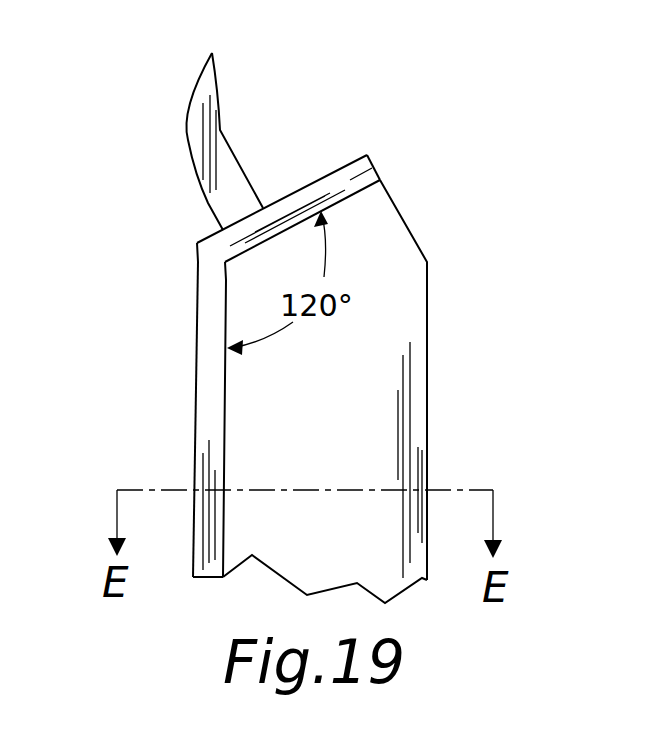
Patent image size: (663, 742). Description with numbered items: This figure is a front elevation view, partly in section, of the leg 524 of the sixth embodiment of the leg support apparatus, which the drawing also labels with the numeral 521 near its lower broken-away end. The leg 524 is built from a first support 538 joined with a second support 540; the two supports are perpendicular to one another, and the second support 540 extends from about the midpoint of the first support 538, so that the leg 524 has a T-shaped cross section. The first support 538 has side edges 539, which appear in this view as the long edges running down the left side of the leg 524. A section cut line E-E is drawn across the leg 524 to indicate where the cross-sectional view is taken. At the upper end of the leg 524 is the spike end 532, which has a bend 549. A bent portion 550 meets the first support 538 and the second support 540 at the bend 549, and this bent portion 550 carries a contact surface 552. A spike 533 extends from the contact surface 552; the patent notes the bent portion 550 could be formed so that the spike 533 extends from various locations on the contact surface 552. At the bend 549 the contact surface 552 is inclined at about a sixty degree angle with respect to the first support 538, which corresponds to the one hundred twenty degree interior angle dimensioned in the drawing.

The body 521 is at (383, 562).
The leg 524 is at (375, 342).
The spike end 532 is at (372, 173).
The spike 533 is at (193, 107).
The first support 538 is at (210, 322).
The side edges 539 is at (210, 400).
The second support 540 is at (380, 425).
The bend 549 is at (197, 243).
The bent portion 550 is at (323, 177).
The contact surface 552 is at (298, 190).